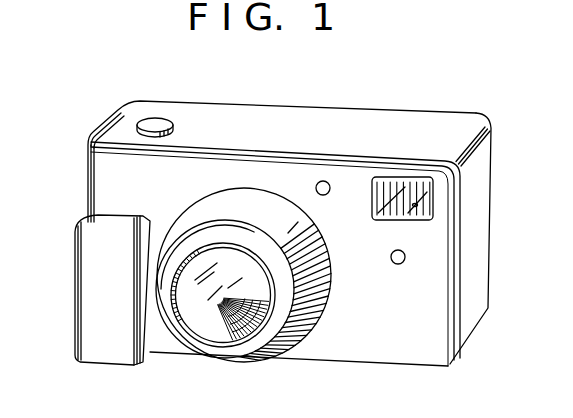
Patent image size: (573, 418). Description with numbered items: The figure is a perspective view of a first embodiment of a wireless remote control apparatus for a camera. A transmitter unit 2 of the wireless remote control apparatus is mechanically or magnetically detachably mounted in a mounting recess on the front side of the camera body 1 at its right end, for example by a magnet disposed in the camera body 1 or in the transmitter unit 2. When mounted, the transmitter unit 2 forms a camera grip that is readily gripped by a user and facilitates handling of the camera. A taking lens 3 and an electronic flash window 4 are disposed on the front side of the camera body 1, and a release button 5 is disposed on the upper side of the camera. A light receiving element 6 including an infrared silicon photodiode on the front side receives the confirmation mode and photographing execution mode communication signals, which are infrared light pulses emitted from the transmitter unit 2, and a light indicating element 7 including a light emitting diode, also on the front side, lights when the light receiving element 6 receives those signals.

The camera body 1 is at (288, 120).
The transmitter unit 2 is at (93, 302).
The taking lens 3 is at (207, 313).
The electronic flash window 4 is at (425, 191).
The release button 5 is at (155, 118).
The light receiving element 6 is at (323, 195).
The light indicating element 7 is at (397, 264).